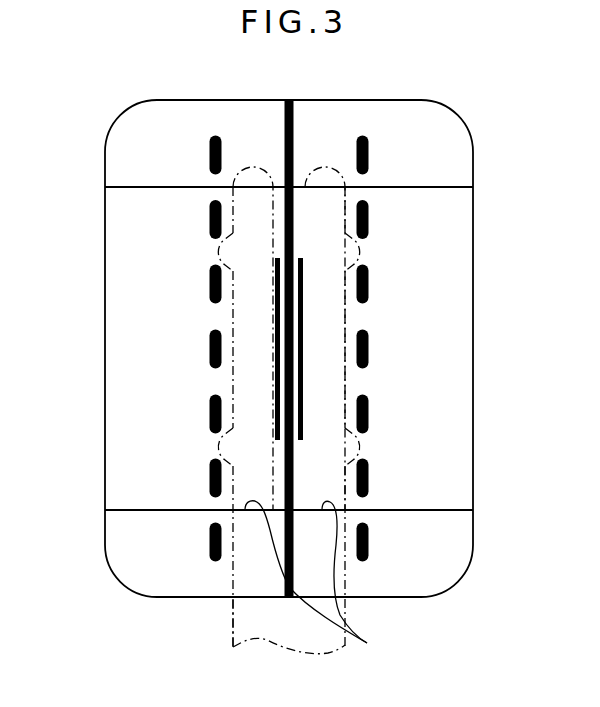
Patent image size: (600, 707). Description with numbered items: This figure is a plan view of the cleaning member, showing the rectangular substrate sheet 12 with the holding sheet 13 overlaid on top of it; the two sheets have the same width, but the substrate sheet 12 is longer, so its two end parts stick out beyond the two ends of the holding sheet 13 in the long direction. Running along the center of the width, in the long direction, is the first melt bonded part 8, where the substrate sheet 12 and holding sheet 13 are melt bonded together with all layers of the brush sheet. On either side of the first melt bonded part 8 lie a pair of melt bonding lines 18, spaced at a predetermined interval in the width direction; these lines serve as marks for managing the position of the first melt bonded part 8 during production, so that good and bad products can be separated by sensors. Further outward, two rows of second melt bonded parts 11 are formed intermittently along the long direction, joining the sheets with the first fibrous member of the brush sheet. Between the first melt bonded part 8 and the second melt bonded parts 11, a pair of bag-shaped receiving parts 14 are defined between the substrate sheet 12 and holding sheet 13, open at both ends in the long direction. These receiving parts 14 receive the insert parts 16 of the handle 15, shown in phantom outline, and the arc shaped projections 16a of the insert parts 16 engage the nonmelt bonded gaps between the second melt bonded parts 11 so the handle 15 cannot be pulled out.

The first melt bonded part 8 is at (295, 132).
The second melt bonded parts 11 is at (210, 223).
The substrate sheet 12 is at (454, 163).
The holding sheet 13 is at (455, 494).
The receiving parts 14 is at (321, 580).
The handle 15 is at (248, 624).
The insert parts 16 is at (246, 368).
The arc shaped projections 16a is at (359, 252).
The melt bonding lines 18 is at (273, 388).